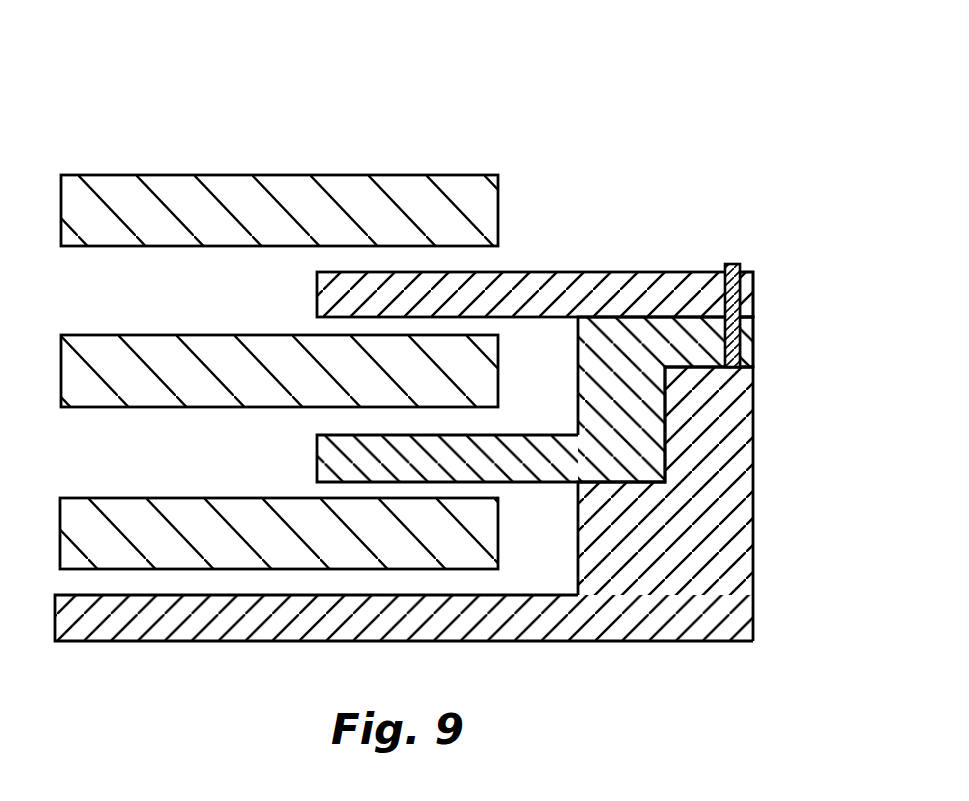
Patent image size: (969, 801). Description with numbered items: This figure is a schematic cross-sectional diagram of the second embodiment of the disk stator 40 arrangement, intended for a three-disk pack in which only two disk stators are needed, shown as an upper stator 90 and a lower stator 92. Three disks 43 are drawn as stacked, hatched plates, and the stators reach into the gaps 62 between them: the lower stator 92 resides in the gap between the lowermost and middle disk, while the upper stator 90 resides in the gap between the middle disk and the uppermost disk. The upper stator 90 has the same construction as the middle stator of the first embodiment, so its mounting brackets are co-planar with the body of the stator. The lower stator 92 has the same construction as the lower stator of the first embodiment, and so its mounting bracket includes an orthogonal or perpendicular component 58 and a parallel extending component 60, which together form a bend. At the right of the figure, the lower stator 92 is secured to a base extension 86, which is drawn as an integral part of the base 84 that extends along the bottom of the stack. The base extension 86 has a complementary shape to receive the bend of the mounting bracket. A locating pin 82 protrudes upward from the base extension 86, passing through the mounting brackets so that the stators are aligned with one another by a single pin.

The disk stator 40 is at (663, 118).
The disk 43 is at (295, 188).
The orthogonal component 58 is at (627, 427).
The parallel extending component 60 is at (687, 297).
The gap 62 is at (551, 215).
The locating pin 82 is at (734, 263).
The base 84 is at (527, 618).
The base extension 86 is at (620, 503).
The upper stator 90 is at (285, 292).
The lower stator 92 is at (283, 450).